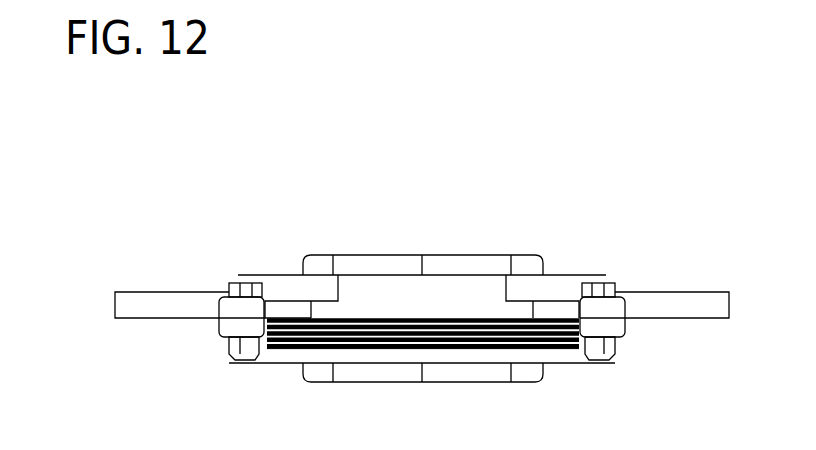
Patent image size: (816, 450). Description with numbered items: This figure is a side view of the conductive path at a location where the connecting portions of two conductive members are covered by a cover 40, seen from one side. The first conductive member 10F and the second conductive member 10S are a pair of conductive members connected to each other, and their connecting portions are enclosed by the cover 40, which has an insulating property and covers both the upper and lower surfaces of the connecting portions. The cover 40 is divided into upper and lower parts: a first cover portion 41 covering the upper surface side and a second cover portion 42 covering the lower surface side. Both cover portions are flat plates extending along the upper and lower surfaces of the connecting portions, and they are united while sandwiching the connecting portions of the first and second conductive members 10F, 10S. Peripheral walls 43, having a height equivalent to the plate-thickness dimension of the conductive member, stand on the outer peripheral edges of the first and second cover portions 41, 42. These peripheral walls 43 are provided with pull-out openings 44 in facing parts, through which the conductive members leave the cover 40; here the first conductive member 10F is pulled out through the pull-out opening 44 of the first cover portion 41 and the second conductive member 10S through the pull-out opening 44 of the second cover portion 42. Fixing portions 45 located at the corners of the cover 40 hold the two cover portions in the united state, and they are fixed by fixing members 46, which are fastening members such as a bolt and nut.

The first conductive member 10F is at (675, 302).
The second conductive member 10S is at (500, 337).
The cover 40 is at (405, 262).
The first cover portion 41 is at (471, 292).
The second cover portion 42 is at (440, 357).
The peripheral wall 43 is at (370, 295).
The pull-out opening 44 is at (375, 337).
The fixing portion 45 is at (227, 329).
The fixing member 46 is at (238, 283).